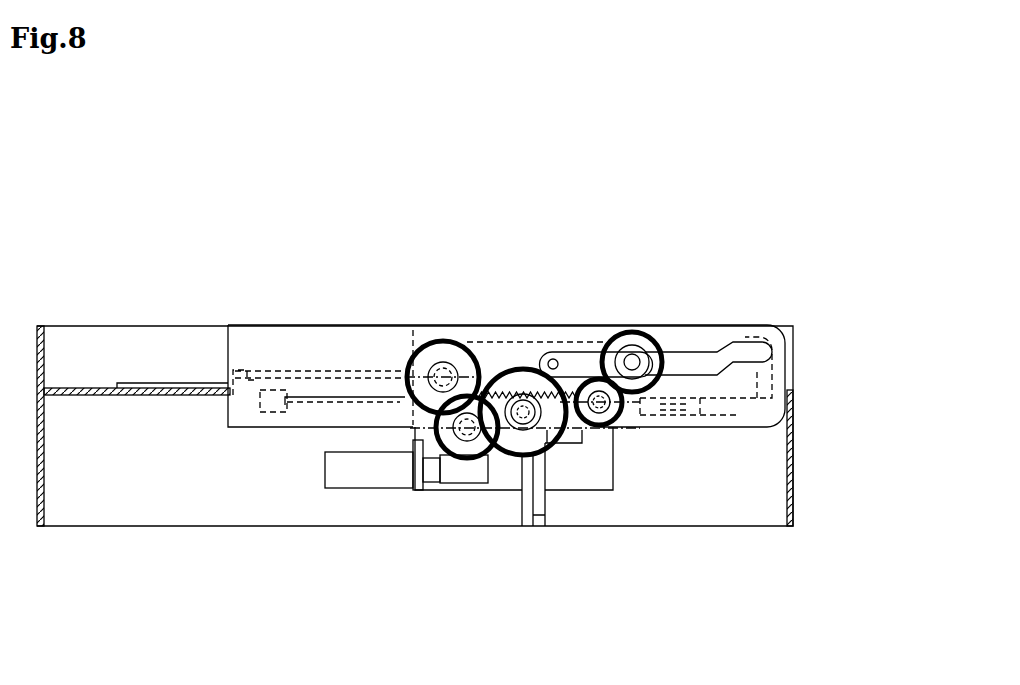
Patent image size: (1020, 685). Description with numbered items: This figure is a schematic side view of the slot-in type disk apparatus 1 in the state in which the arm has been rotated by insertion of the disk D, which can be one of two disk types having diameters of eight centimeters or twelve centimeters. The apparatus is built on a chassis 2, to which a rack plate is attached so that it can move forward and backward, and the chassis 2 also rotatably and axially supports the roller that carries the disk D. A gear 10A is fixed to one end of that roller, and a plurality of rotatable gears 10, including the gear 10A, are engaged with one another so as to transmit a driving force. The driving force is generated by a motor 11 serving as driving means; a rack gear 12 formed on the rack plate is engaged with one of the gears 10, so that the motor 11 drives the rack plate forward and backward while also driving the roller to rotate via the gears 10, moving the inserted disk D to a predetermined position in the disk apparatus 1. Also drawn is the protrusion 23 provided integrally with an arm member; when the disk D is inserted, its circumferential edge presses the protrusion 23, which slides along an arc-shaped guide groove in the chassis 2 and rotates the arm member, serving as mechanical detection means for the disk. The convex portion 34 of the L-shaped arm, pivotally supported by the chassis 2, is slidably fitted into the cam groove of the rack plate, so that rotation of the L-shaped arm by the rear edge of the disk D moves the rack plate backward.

The disk apparatus 1 is at (768, 247).
The chassis 2 is at (752, 463).
The gears 10 is at (582, 453).
The gear 10A is at (630, 333).
The motor 11 is at (368, 472).
The rack gear 12 is at (507, 372).
The protrusion 23 is at (790, 363).
The convex portion 34 is at (243, 375).
The disk D is at (793, 406).